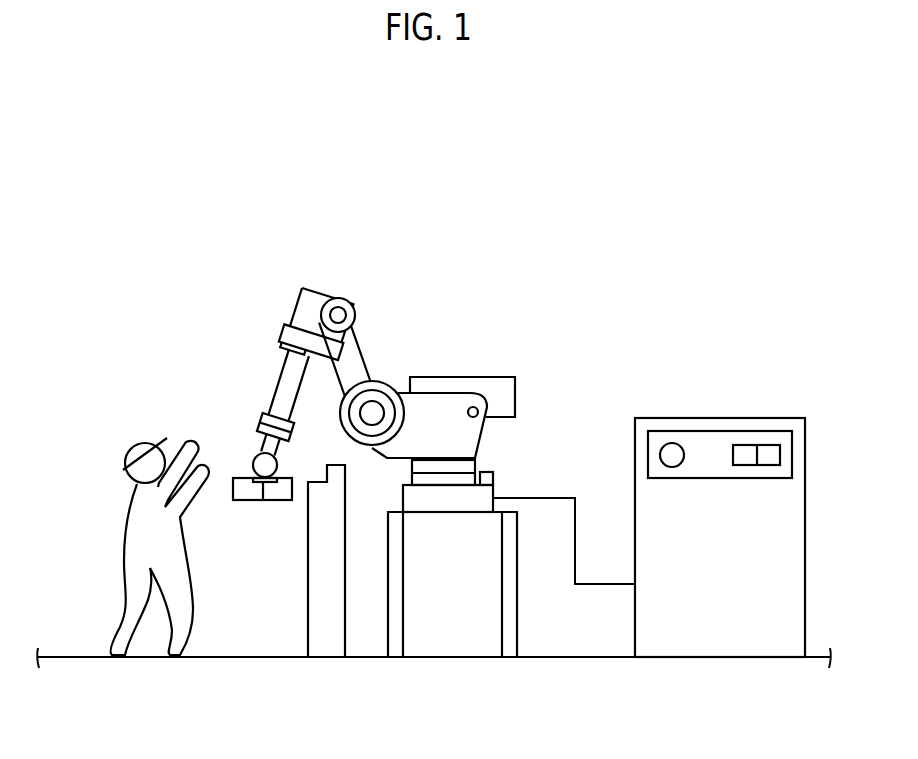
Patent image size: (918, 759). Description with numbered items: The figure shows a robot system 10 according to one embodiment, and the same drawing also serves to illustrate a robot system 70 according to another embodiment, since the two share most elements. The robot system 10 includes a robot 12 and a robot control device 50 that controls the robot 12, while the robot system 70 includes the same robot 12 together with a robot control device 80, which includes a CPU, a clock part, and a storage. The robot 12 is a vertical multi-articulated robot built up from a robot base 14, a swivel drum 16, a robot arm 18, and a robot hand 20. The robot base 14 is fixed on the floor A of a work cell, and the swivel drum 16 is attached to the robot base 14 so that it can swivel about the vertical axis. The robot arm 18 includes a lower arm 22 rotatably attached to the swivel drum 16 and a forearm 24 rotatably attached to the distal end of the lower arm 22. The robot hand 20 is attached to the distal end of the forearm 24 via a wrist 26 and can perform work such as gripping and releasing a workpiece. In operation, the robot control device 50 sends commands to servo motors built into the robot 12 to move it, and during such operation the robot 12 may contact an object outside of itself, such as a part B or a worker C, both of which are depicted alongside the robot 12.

The robot system 10 is at (762, 118).
The robot system 70 is at (437, 439).
The robot 12 is at (421, 266).
The robot base 14 is at (477, 498).
The swivel drum 16 is at (455, 418).
The robot arm 18 is at (400, 200).
The robot hand 20 is at (276, 493).
The lower arm 22 is at (360, 355).
The forearm 24 is at (292, 370).
The wrist 26 is at (253, 458).
The robot control device 50 is at (733, 418).
The robot control device 80 is at (720, 537).
The floor A is at (828, 650).
The part B is at (326, 643).
The worker C is at (127, 442).